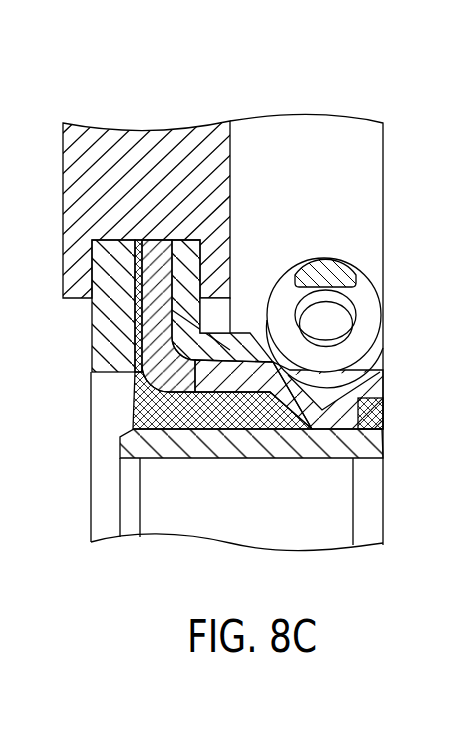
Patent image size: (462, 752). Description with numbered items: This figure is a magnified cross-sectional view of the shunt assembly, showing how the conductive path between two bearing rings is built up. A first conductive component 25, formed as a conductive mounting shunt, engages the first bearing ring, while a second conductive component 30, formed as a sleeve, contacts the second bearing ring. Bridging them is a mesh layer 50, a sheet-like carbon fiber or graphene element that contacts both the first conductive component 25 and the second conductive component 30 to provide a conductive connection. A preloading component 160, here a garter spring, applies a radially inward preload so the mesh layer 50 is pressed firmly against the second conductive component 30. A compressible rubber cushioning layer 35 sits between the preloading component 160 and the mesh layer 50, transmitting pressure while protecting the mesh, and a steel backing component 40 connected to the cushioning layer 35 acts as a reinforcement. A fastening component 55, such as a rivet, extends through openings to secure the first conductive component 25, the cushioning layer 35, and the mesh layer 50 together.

The first conductive component 25 is at (112, 339).
The second conductive component 30 is at (195, 448).
The cushioning layer 35 is at (182, 371).
The backing component 40 is at (233, 335).
The mesh layer 50 is at (372, 410).
The fastening component 55 is at (177, 148).
The preloading component 160 is at (367, 305).